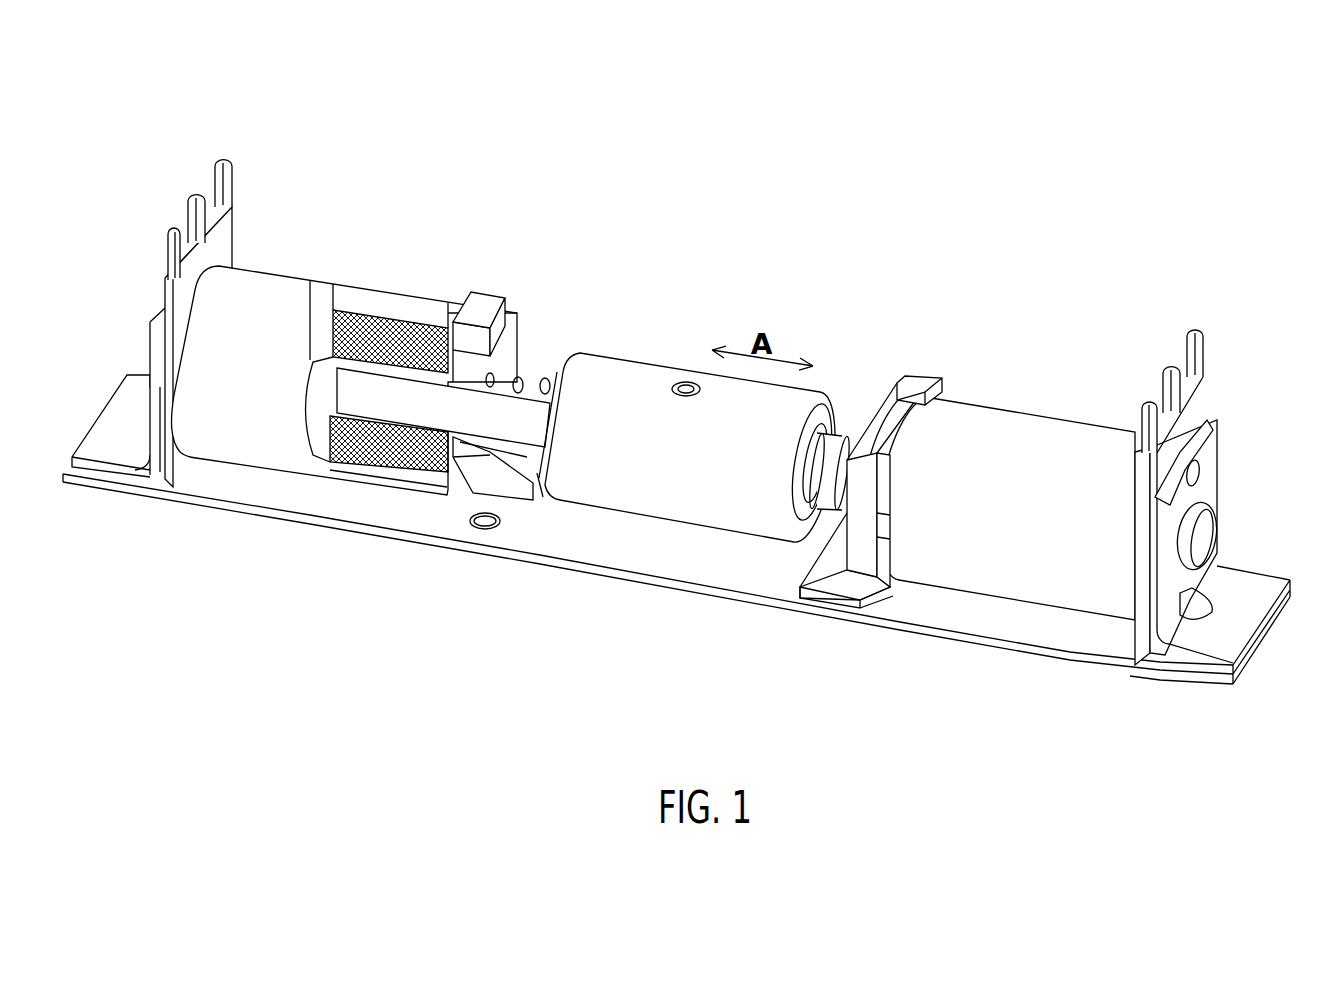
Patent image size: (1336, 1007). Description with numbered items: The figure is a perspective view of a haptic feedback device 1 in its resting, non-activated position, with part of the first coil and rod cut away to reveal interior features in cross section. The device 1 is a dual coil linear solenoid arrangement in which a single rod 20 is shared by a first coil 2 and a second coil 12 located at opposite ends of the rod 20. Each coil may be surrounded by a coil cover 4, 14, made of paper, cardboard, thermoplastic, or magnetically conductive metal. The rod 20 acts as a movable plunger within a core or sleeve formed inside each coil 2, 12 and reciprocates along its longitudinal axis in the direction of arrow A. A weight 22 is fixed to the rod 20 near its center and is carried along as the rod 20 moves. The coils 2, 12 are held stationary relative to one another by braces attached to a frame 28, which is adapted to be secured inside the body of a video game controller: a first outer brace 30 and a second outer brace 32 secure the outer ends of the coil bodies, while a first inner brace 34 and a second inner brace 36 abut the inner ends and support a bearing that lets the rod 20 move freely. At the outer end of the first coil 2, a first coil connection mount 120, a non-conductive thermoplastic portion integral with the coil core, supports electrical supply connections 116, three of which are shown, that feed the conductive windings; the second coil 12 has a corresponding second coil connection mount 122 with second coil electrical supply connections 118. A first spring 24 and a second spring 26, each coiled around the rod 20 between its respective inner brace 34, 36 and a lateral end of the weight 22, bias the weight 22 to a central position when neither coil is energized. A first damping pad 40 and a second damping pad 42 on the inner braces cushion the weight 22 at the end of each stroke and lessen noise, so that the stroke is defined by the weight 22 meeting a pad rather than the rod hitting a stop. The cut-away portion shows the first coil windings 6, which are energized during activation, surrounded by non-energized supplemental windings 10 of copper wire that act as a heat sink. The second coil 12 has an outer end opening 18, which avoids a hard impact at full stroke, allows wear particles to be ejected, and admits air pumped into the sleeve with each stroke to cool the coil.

The haptic feedback device 1 is at (845, 132).
The first coil 2 is at (344, 302).
The coil cover 4 is at (377, 221).
The first coil windings 6 is at (405, 325).
The supplemental windings 10 is at (454, 239).
The second coil 12 is at (1019, 413).
The coil cover 14 is at (1174, 440).
The outer end opening 18 is at (1241, 526).
The rod 20 is at (676, 466).
The weight 22 is at (687, 370).
The first spring 24 is at (546, 390).
The second spring 26 is at (854, 559).
The frame 28 is at (676, 534).
The first outer brace 30 is at (138, 497).
The second outer brace 32 is at (1181, 702).
The first inner brace 34 is at (532, 266).
The second inner brace 36 is at (938, 453).
The first damping pad 40 is at (554, 304).
The second damping pad 42 is at (963, 342).
The electrical supply connections 116 is at (151, 185).
The second coil electrical supply connections 118 is at (1234, 367).
The first coil connection mount 120 is at (257, 288).
The second coil connection mount 122 is at (1243, 474).